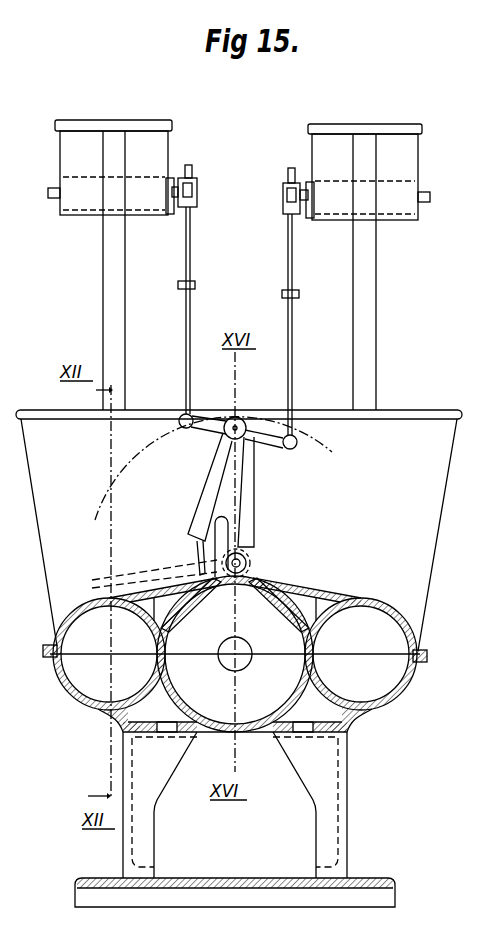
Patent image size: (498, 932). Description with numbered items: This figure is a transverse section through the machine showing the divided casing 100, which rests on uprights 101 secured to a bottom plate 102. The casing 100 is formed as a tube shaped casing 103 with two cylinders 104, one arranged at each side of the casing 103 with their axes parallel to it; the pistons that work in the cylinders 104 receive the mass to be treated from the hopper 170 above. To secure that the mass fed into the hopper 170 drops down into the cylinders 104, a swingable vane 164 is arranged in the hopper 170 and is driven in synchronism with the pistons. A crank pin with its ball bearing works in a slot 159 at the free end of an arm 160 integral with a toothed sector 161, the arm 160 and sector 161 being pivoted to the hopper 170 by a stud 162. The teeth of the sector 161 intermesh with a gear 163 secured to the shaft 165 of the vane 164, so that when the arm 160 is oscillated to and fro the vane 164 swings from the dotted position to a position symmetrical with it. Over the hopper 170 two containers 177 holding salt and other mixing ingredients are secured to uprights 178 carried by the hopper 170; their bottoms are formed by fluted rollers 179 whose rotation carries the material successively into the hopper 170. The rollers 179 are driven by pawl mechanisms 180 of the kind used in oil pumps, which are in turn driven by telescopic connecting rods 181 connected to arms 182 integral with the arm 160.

The divided casing 100 is at (318, 606).
The uprights 101 is at (235, 805).
The bottom plate 102 is at (222, 878).
The tube shaped casing 103 is at (178, 610).
The cylinders 104 is at (91, 605).
The slot 159 is at (212, 552).
The arm 160 is at (240, 473).
The toothed sector 161 is at (205, 502).
The stud 162 is at (222, 436).
The gear 163 is at (247, 571).
The swingable vane 164 is at (132, 576).
The shaft 165 is at (250, 556).
The hopper 170 is at (239, 530).
The containers 177 is at (143, 136).
The uprights 178 is at (103, 256).
The fluted rollers 179 is at (65, 175).
The pawl mechanisms 180 is at (194, 180).
The telescopic connecting rods 181 is at (186, 256).
The arms 182 is at (233, 418).